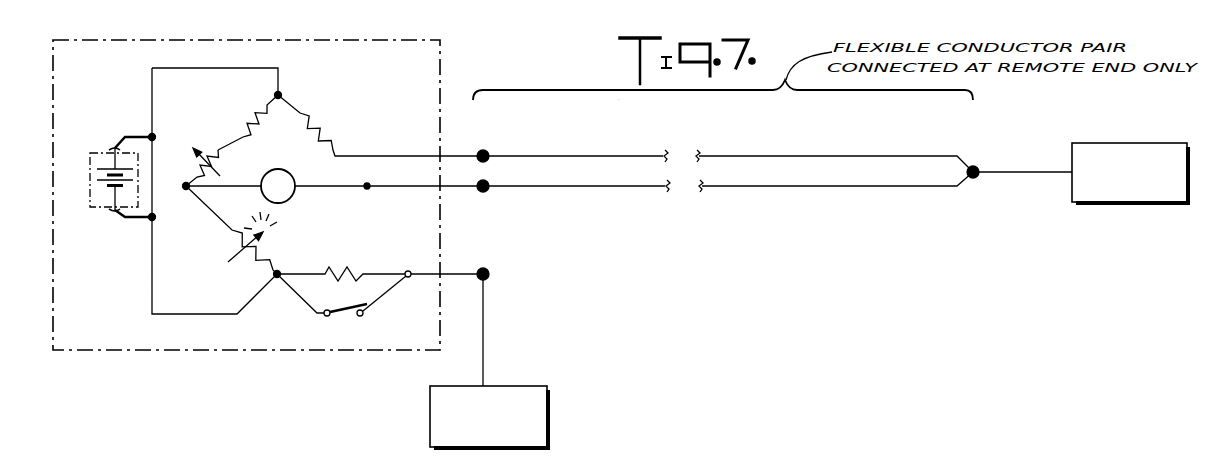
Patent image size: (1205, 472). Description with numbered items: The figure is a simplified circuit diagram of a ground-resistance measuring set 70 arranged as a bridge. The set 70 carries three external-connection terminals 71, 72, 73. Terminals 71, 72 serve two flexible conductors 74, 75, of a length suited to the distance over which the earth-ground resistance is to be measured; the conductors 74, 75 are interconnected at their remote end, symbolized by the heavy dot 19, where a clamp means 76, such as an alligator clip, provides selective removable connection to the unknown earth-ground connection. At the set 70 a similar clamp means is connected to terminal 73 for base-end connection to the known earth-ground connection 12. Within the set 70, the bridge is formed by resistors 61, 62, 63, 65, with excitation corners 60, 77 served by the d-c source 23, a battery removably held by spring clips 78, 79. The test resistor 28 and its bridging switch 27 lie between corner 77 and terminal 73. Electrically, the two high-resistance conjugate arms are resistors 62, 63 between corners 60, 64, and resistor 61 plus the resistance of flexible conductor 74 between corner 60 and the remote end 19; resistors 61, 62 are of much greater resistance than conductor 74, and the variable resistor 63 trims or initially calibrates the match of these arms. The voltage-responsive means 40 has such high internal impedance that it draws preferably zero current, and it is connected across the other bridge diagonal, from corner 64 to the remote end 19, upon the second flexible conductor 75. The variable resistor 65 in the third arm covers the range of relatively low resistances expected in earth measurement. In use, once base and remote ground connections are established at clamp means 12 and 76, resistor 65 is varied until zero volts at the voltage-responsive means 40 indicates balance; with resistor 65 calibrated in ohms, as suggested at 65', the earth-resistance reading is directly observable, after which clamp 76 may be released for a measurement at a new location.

The ground-resistance measuring set 70 is at (440, 70).
The d-c source 23 is at (90, 172).
The spring clip 78 is at (117, 136).
The spring clip 79 is at (117, 212).
The excitation corner 60 is at (280, 93).
The resistor 61 is at (323, 133).
The resistor 62 is at (245, 104).
The variable resistor 63 is at (213, 148).
The corner 64 is at (186, 188).
The variable resistor 65 is at (224, 231).
The calibration in ohms 65' is at (290, 215).
The voltage-responsive means 40 is at (282, 170).
The test resistor 28 is at (348, 268).
The bridging switch 27 is at (343, 317).
The excitation corner 77 is at (277, 280).
The external-connection terminal 71 is at (486, 150).
The external-connection terminal 72 is at (484, 192).
The external-connection terminal 73 is at (489, 274).
The flexible conductor 74 is at (700, 132).
The flexible conductor 75 is at (713, 193).
The remote end 19 is at (980, 153).
The clamp means 76 is at (1118, 142).
The known earth-ground connection 12 is at (505, 385).